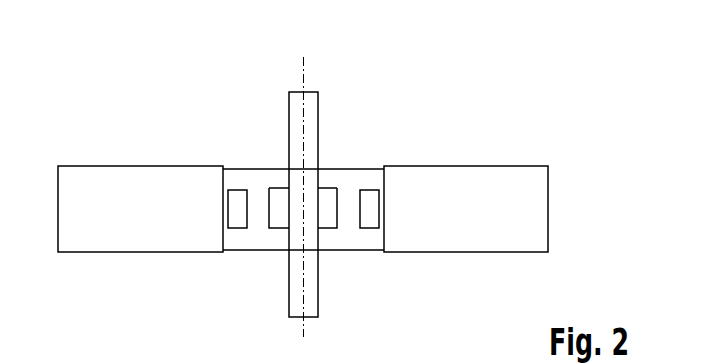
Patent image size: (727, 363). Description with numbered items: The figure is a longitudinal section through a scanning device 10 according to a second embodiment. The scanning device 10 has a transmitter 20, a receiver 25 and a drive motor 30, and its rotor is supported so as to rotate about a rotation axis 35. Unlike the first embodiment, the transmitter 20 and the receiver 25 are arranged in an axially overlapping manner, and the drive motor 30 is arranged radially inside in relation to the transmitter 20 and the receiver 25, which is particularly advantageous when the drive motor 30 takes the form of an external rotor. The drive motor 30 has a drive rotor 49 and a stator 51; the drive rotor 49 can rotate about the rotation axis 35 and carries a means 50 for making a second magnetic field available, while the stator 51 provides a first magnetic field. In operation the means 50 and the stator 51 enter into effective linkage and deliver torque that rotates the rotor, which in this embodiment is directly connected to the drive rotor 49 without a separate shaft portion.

The scanning device 10 is at (466, 92).
The transmitter 20 is at (131, 163).
The receiver 25 is at (501, 181).
The drive motor 30 is at (366, 251).
The rotation axis 35 is at (302, 80).
The drive rotor 49 is at (325, 251).
The means for making a second magnetic field available 50 is at (238, 229).
The stator 51 is at (307, 198).